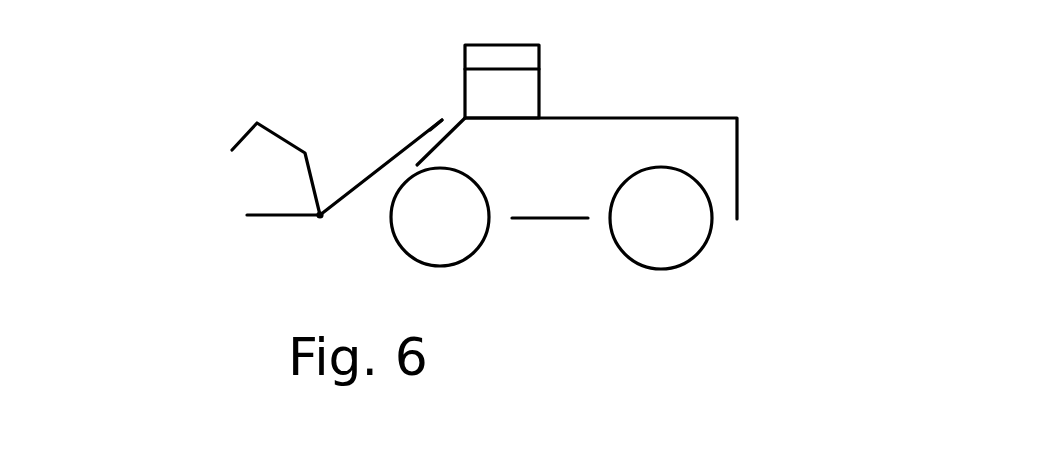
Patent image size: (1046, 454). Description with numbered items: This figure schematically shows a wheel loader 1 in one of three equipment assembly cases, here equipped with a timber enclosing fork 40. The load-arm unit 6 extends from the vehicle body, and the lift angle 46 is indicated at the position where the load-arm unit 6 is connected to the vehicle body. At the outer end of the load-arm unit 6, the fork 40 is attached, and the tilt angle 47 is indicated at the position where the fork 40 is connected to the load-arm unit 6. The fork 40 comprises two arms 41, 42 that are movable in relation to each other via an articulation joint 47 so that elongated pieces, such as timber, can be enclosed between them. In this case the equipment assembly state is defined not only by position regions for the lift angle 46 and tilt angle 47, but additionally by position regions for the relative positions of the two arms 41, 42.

The wheel loader 1 is at (800, 89).
The timber enclosing fork 40 is at (283, 169).
The arm 41 is at (297, 217).
The arm 42 is at (265, 126).
The load-arm unit 6 is at (380, 135).
The lift angle 46 is at (425, 98).
The tilt angle / articulation joint 47 is at (345, 224).